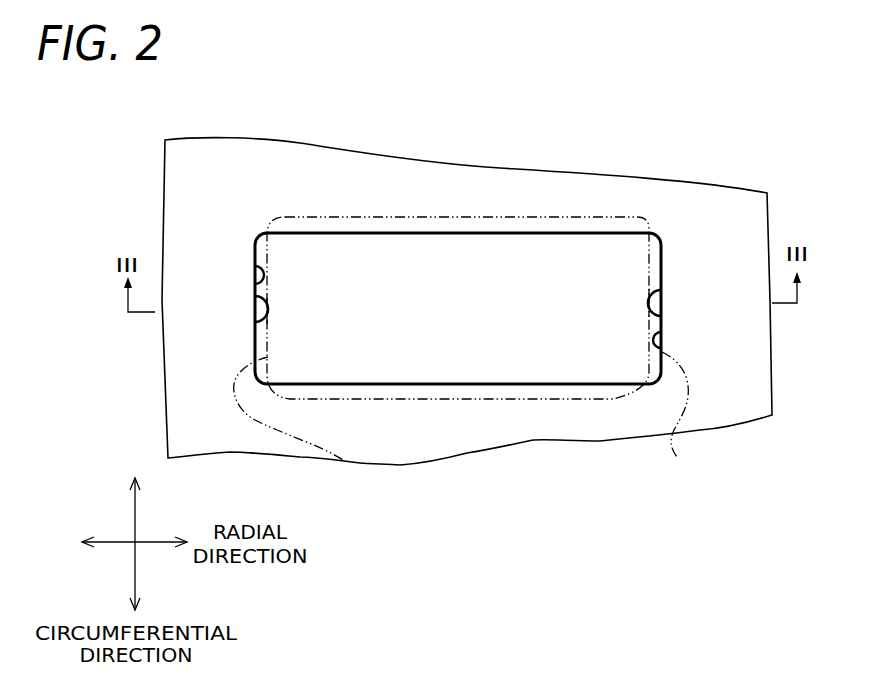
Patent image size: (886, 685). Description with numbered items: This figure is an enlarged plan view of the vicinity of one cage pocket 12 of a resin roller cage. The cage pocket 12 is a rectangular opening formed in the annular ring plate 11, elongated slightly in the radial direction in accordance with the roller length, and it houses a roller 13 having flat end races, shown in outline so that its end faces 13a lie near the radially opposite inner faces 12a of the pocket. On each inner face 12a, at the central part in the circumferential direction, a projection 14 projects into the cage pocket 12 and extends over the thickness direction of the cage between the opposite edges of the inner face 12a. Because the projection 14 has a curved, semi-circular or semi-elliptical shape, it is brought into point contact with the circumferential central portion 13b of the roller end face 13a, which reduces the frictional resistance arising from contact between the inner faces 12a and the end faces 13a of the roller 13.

The ring plate 11 is at (707, 222).
The cage pocket 12 is at (655, 233).
The inner face of cage pocket 12a is at (253, 290).
The roller 13 is at (381, 216).
The roller end face 13a is at (343, 460).
The circumferential central portion of roller end face 13b is at (277, 310).
The projection 14 is at (257, 312).